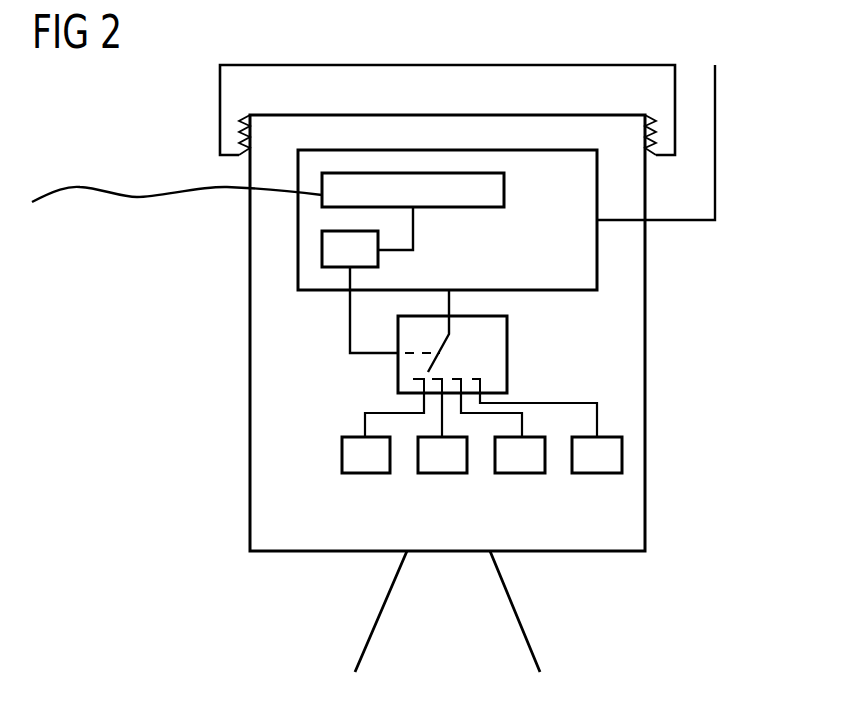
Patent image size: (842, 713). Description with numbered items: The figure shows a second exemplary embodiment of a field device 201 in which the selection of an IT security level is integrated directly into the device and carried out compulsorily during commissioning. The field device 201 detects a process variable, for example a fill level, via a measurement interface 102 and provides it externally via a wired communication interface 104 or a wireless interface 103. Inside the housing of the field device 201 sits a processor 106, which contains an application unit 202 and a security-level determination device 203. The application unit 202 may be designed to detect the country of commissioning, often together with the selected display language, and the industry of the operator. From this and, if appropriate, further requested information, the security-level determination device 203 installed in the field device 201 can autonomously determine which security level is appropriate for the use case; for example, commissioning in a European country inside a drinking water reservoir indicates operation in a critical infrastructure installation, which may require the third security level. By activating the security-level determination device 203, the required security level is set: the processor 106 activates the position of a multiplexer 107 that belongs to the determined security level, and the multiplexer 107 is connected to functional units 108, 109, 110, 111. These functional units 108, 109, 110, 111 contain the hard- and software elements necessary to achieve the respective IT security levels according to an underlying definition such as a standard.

The measurement interface 102 is at (522, 622).
The wireless interface 103 is at (715, 153).
The wired communication interface 104 is at (138, 197).
The processor 106 is at (320, 290).
The multiplexer 107 is at (507, 357).
The functional unit 108 is at (365, 473).
The functional unit 109 is at (440, 473).
The functional unit 110 is at (520, 473).
The functional unit 111 is at (597, 473).
The field device 201 is at (645, 333).
The application unit 202 is at (504, 190).
The security-level determination device 203 is at (378, 255).